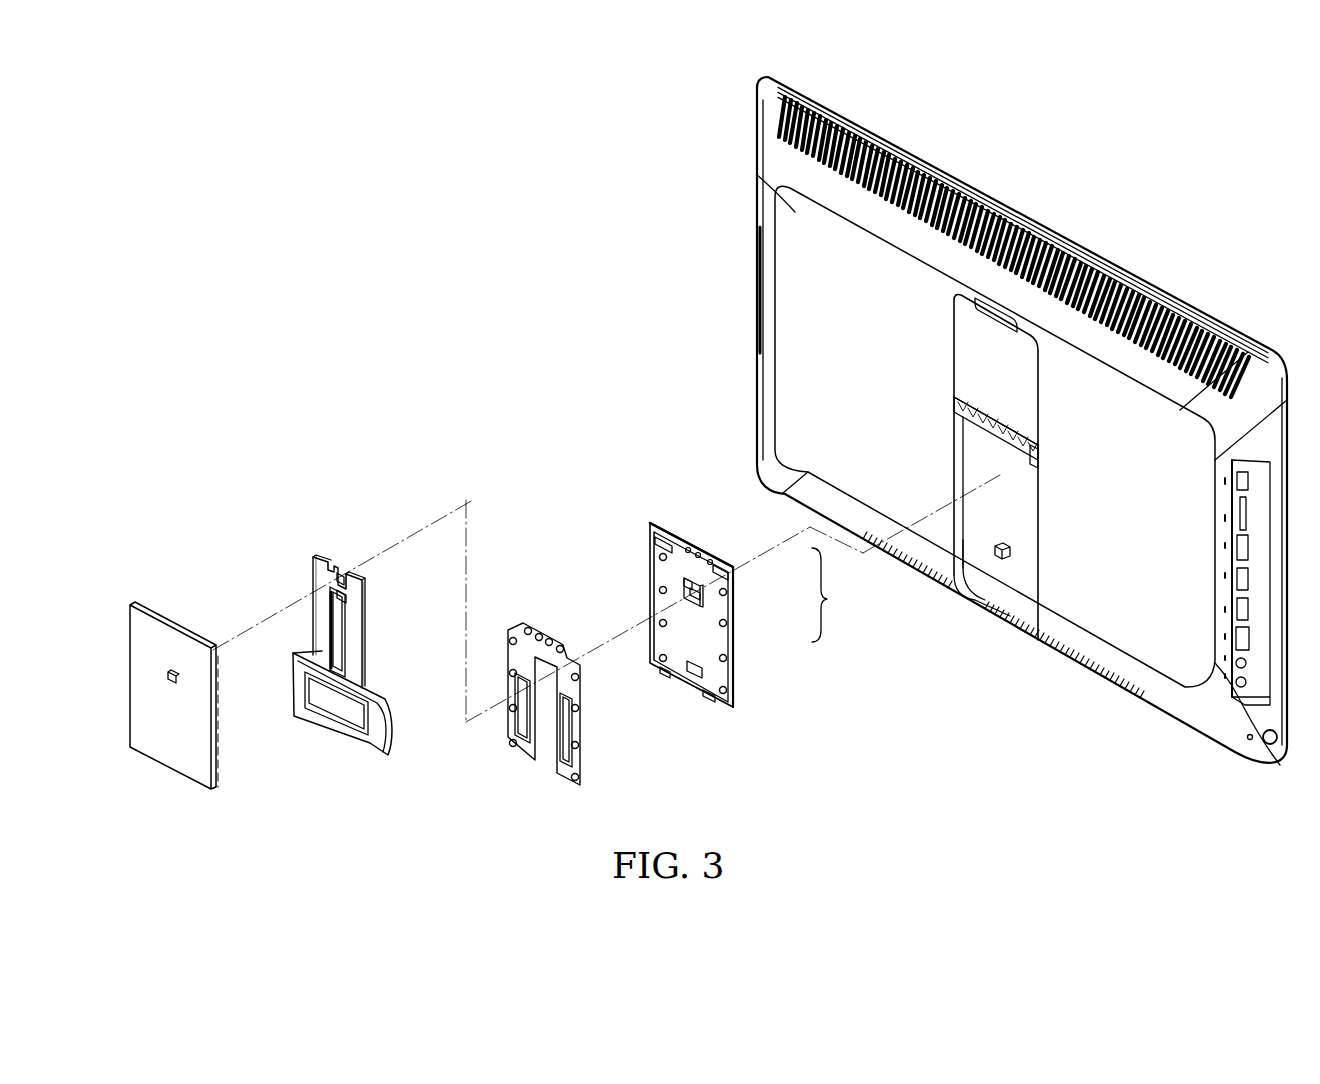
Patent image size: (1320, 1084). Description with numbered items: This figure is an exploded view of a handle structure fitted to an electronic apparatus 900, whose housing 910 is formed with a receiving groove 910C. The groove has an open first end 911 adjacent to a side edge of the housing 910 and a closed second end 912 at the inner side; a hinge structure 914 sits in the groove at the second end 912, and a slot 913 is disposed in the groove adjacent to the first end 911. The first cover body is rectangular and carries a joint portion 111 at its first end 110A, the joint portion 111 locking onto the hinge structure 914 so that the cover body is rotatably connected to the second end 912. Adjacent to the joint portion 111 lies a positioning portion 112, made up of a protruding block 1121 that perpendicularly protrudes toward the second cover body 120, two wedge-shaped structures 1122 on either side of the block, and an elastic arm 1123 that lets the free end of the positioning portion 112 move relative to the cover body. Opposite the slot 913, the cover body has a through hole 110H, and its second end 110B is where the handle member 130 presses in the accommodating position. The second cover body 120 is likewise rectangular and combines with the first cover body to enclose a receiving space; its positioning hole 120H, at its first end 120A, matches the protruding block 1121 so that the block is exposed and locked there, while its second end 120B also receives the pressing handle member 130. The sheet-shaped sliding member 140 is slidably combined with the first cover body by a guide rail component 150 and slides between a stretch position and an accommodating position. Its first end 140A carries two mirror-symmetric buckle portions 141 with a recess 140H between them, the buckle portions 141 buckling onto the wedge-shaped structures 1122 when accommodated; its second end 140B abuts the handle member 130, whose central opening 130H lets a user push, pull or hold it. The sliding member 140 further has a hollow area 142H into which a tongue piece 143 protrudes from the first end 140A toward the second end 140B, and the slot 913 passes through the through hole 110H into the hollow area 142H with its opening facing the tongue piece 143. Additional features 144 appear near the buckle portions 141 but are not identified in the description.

The electronic apparatus 900 is at (1188, 294).
The housing 910 is at (808, 250).
The receiving groove 910C is at (962, 560).
The first end 911 is at (1018, 618).
The second end 912 is at (955, 411).
The slot 913 is at (1003, 558).
The hinge structure 914 is at (1020, 442).
The first end of first cover body 110A is at (648, 547).
The second end of first cover body 110B is at (675, 667).
The through hole 110H is at (700, 677).
The joint portion 111 is at (690, 540).
The positioning portion 112 is at (771, 595).
The protruding block 1121 is at (700, 603).
The wedge-shaped structure 1122 is at (695, 593).
The elastic arm 1123 is at (695, 585).
The second cover body 120 is at (128, 598).
The first end of second cover body 120A is at (167, 635).
The second end of second cover body 120B is at (168, 762).
The positioning hole 120H is at (167, 678).
The handle member 130 is at (390, 742).
The opening 130H is at (325, 705).
The sliding member 140 is at (375, 642).
The first end of sliding member 140A is at (326, 573).
The second end of sliding member 140B is at (320, 651).
The recess 140H is at (342, 573).
The buckle portion 141 is at (316, 560).
The hollow area 142H is at (342, 653).
The tongue piece 143 is at (345, 601).
The protrusion of fixing plate 144 is at (335, 565).
The guide rail component 150 is at (520, 760).